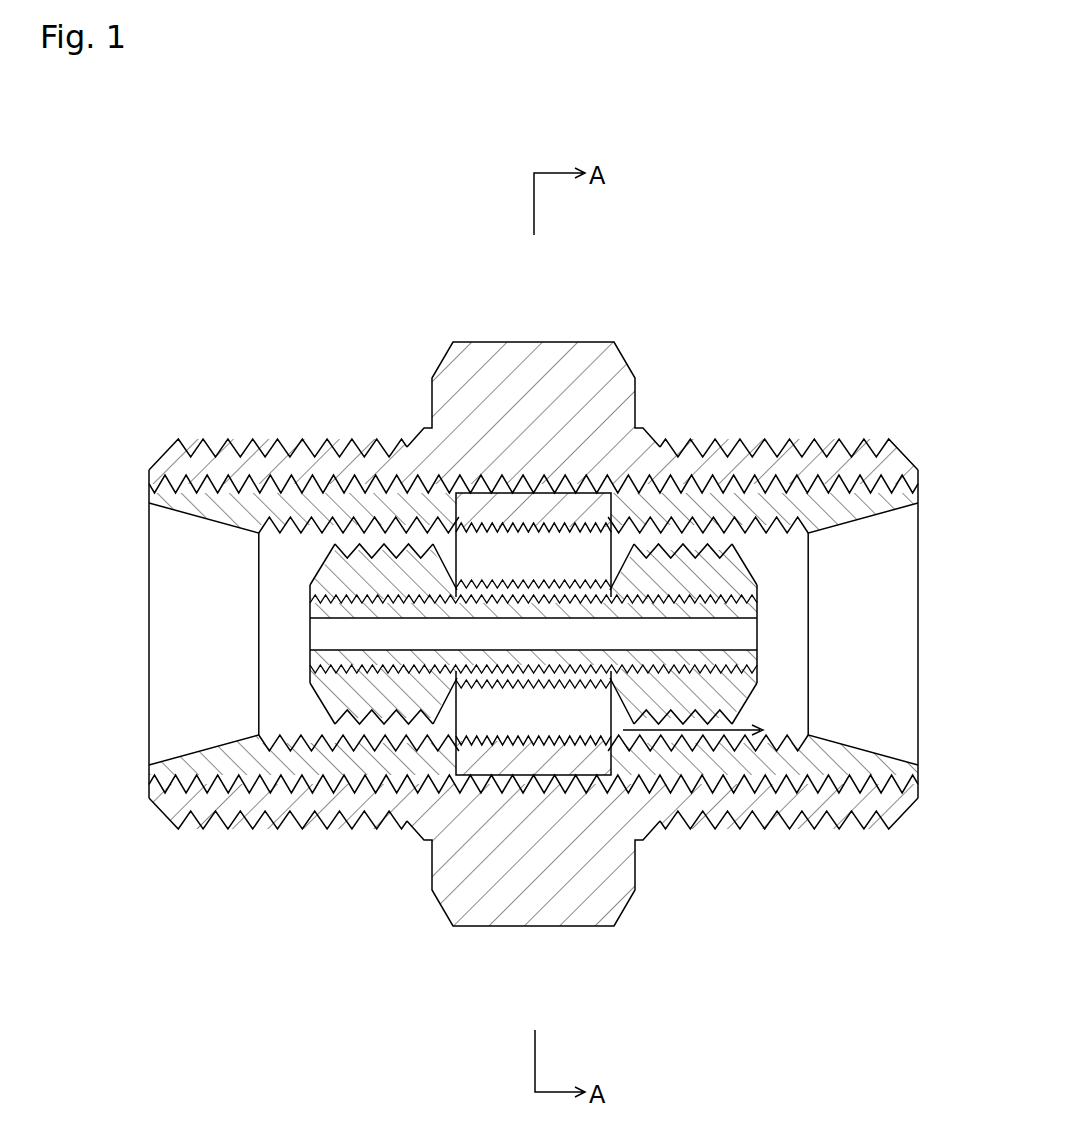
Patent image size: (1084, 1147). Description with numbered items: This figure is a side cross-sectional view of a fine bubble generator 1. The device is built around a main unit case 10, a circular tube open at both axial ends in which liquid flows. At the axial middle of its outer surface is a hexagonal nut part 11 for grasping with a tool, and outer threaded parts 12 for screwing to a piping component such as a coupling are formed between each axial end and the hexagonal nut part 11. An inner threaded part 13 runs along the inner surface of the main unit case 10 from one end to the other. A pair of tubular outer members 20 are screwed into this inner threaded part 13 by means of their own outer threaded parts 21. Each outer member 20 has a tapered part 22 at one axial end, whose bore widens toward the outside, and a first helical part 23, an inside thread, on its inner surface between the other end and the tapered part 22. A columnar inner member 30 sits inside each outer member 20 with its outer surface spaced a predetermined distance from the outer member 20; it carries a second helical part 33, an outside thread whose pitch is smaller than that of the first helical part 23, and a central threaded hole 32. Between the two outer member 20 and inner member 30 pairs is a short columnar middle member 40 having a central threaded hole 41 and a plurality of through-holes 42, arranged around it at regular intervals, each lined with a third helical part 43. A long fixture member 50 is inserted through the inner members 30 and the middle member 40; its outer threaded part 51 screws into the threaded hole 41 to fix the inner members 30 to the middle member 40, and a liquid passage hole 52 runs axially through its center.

The fine bubble generator 1 is at (530, 608).
The main unit case 10 is at (483, 341).
The hexagonal nut part 11 is at (545, 357).
The outer threaded part 12 is at (298, 442).
The inner threaded part 13 is at (343, 482).
The outer member 20 is at (149, 490).
The outer threaded part 21 is at (223, 485).
The tapered part 22 is at (183, 647).
The first helical part 23 is at (372, 745).
The inner member 30 is at (320, 572).
The threaded hole 32 is at (310, 623).
The second helical part 33 is at (392, 543).
The middle member 40 is at (545, 800).
The threaded hole 41 is at (527, 616).
The through-hole 42 is at (598, 712).
The third helical part 43 is at (510, 578).
The fixture member 50 is at (310, 608).
The outer threaded part 51 is at (308, 673).
The liquid passage hole 52 is at (310, 648).